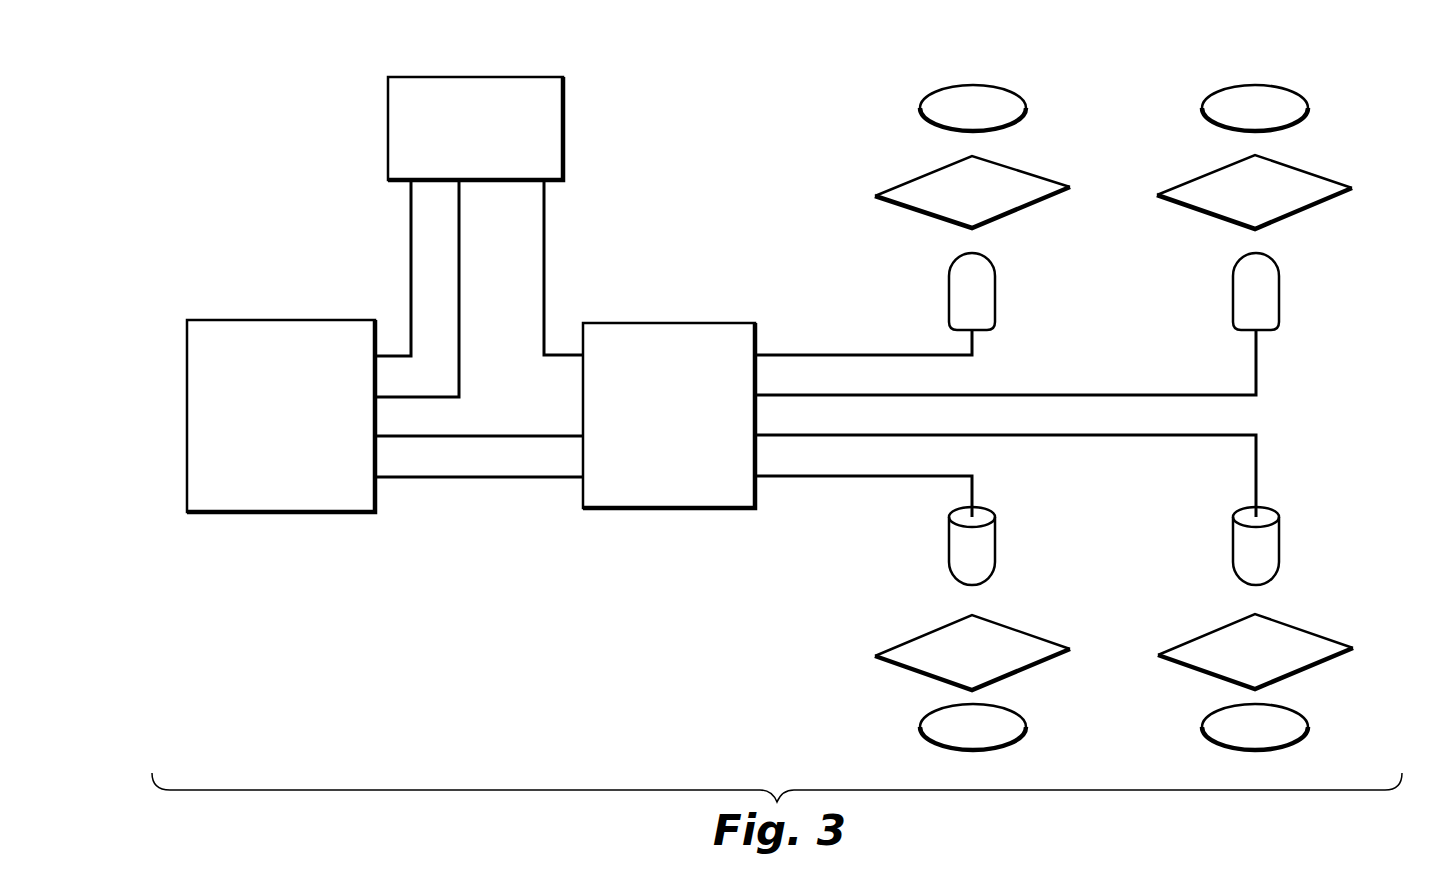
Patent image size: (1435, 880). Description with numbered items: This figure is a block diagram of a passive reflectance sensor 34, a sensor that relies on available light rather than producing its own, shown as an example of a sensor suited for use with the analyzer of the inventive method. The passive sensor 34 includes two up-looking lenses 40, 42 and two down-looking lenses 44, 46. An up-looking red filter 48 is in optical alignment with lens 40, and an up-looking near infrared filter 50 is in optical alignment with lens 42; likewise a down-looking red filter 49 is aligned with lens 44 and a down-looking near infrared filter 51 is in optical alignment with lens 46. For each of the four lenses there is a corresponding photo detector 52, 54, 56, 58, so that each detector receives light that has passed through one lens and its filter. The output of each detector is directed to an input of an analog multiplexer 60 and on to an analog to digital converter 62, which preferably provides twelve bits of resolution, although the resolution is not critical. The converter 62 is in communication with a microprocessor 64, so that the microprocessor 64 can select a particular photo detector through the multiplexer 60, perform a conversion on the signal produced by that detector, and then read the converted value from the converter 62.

The passive sensor 34 is at (1308, 79).
The up-looking lens 40 is at (1025, 102).
The up-looking lens 42 is at (1307, 117).
The down-looking lens 44 is at (1023, 727).
The down-looking lens 46 is at (1300, 720).
The up-looking red filter 48 is at (1023, 210).
The up-looking near infrared filter 50 is at (1317, 205).
The down-looking red filter 49 is at (1027, 640).
The down-looking near infrared filter 51 is at (1328, 642).
The photo detector 52 is at (995, 290).
The photo detector 54 is at (1279, 289).
The photo detector 56 is at (987, 552).
The photo detector 58 is at (1276, 547).
The analog multiplexer 60 is at (677, 322).
The analog to digital converter 62 is at (388, 93).
The microprocessor 64 is at (245, 320).